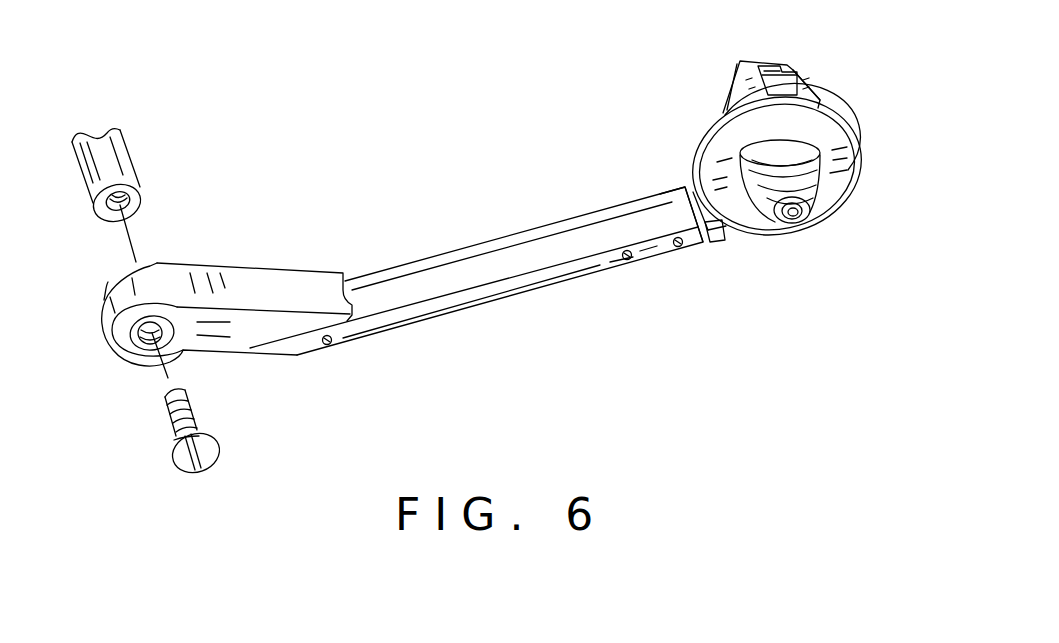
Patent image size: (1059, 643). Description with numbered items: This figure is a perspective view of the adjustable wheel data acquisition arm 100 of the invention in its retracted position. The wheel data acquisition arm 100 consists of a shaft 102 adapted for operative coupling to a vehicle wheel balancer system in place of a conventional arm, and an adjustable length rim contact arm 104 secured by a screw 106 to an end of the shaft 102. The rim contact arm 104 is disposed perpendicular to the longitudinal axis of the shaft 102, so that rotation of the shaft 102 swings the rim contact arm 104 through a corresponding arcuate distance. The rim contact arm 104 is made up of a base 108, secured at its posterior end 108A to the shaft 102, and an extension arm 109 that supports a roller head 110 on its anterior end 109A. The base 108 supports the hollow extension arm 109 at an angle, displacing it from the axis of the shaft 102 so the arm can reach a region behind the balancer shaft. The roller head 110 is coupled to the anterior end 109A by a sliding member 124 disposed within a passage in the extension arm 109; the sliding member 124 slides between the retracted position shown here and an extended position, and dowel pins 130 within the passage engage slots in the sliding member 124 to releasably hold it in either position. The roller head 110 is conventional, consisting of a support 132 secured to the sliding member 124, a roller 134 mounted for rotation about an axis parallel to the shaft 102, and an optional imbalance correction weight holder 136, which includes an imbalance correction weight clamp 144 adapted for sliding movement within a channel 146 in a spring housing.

The wheel data acquisition arm 100 is at (567, 110).
The shaft 102 is at (137, 175).
The rim contact arm 104 is at (376, 378).
The screw 106 is at (218, 460).
The base 108 is at (224, 337).
The posterior end 108A is at (102, 302).
The extension arm 109 is at (508, 283).
The anterior end 109A is at (667, 203).
The roller head 110 is at (862, 122).
The sliding member 124 is at (705, 228).
The dowel pins 130 is at (326, 345).
The support 132 is at (723, 229).
The roller 134 is at (840, 178).
The imbalance correction weight holder 136 is at (720, 54).
The imbalance correction weight clamp 144 is at (817, 78).
The channel 146 is at (772, 65).